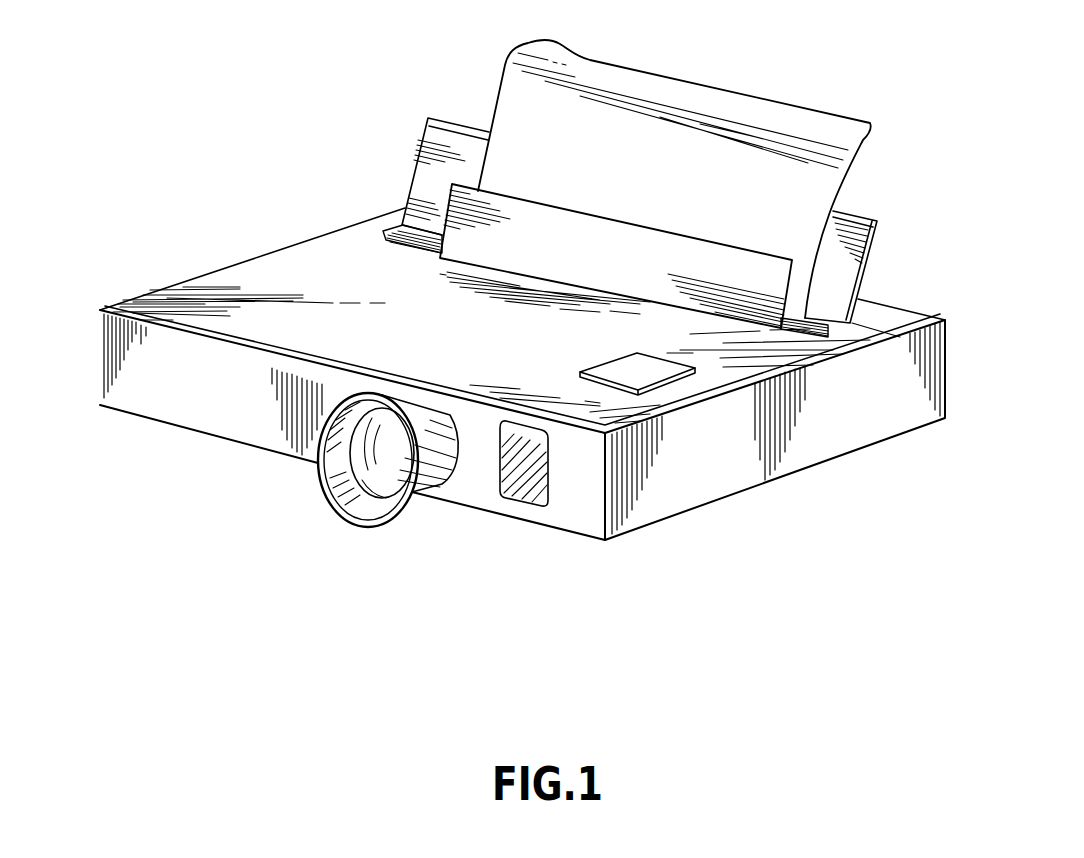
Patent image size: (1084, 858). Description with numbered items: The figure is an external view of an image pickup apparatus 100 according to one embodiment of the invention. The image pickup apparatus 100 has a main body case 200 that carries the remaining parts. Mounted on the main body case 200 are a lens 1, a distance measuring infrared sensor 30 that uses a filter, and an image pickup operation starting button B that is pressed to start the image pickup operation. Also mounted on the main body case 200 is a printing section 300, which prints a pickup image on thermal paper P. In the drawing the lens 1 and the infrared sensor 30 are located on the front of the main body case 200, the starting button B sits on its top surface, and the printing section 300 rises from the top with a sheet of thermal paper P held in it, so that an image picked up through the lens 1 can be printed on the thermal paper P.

The image pickup apparatus 100 is at (737, 535).
The main body case 200 is at (267, 275).
The printing section 300 is at (470, 253).
The lens 1 is at (400, 482).
The distance measuring infrared sensor 30 is at (530, 500).
The image pickup operation starting button B is at (672, 378).
The thermal paper P is at (690, 108).